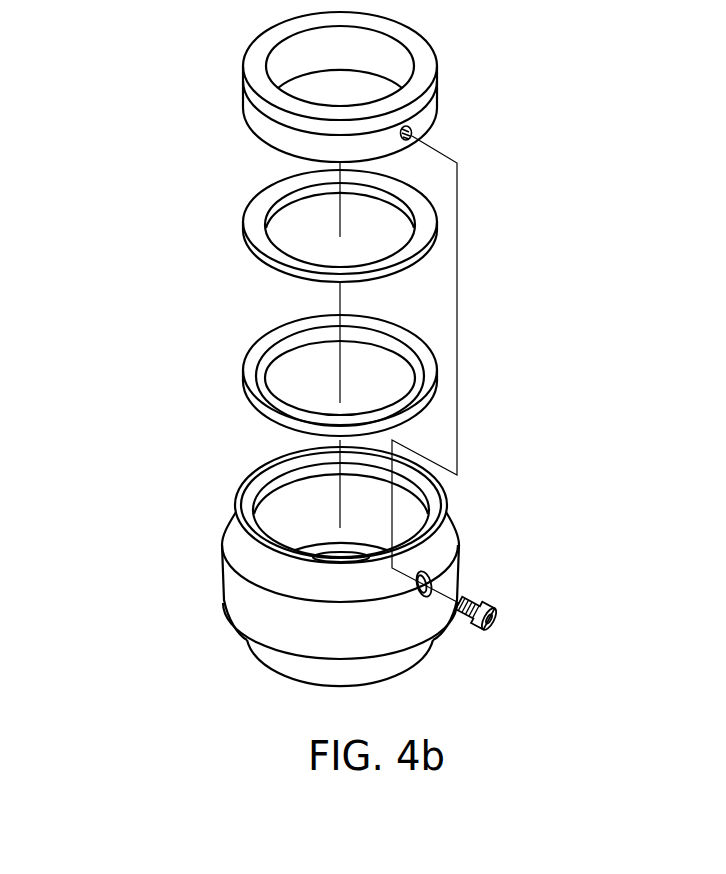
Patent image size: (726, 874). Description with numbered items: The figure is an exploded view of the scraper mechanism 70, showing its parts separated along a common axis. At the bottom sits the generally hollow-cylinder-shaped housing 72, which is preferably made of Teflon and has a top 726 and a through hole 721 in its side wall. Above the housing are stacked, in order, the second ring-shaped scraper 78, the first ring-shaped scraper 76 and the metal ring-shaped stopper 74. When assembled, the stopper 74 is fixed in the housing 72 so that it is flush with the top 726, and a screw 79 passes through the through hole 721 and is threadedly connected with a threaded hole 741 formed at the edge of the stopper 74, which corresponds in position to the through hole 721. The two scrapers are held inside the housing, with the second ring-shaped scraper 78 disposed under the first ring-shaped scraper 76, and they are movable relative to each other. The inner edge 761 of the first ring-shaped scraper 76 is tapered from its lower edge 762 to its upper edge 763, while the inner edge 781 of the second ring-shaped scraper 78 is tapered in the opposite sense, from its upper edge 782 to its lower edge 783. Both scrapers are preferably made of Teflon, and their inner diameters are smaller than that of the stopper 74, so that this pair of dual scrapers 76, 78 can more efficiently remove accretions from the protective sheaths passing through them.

The scraper mechanism 70 is at (122, 306).
The housing 72 is at (460, 558).
The through hole 721 is at (433, 583).
The top 726 is at (243, 495).
The ring-shaped stopper 74 is at (433, 93).
The threaded hole 741 is at (412, 134).
The first ring-shaped scraper 76 is at (232, 226).
The inner edge 761 is at (302, 193).
The lower edge 762 is at (250, 268).
The upper edge 763 is at (263, 200).
The second ring-shaped scraper 78 is at (231, 379).
The inner edge 781 is at (280, 345).
The upper edge 782 is at (256, 352).
The lower edge 783 is at (257, 424).
The screw 79 is at (500, 628).